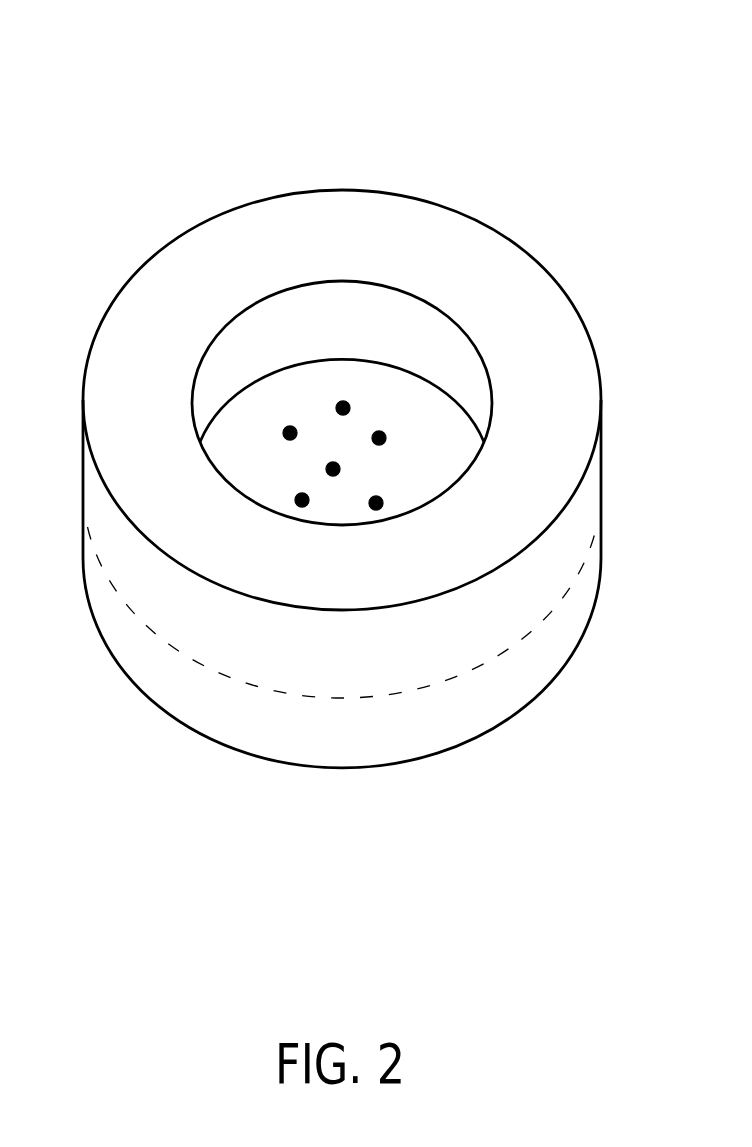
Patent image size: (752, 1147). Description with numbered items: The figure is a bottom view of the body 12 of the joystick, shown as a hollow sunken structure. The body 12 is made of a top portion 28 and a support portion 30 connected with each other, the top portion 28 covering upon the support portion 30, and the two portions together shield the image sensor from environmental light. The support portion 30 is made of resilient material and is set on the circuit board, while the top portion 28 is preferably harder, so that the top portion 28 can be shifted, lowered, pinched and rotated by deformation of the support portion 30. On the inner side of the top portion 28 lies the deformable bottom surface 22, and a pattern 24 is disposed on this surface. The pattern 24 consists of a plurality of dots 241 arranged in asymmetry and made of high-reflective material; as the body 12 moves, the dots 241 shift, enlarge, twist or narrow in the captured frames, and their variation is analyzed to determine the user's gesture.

The body 12 is at (593, 90).
The deformable bottom surface 22 is at (268, 459).
The pattern 24 is at (211, 296).
The dots 241 is at (288, 428).
The top portion 28 is at (608, 493).
The support portion 30 is at (608, 405).